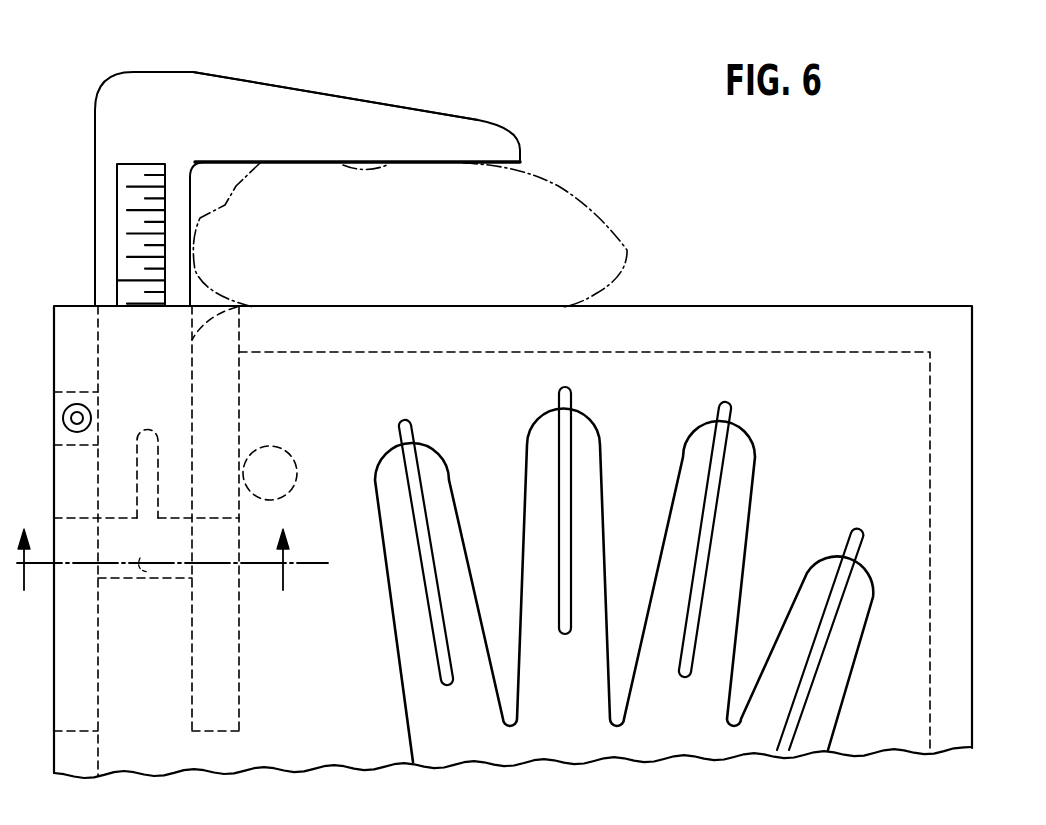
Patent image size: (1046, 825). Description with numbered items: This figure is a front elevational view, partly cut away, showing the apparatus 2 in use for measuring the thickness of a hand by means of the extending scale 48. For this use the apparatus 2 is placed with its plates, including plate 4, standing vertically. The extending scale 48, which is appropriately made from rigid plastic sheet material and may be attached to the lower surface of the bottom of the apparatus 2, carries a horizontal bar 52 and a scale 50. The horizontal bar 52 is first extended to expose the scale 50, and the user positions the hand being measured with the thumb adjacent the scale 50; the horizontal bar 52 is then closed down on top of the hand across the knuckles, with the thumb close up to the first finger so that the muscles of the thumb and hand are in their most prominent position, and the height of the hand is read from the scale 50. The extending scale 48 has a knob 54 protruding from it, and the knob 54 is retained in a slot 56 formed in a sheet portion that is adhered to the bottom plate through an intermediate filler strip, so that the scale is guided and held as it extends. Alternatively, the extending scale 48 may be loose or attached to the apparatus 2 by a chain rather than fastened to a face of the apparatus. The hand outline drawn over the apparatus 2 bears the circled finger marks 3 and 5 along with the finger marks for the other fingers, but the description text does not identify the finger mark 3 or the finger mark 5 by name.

The glove fixture / template 2 is at (494, 470).
The middle finger stiffener 3 is at (565, 510).
The ring finger stiffener 4 is at (705, 539).
The little finger stiffener 5 is at (820, 639).
The clamp body 48 is at (162, 84).
The ruler / gauge 50 is at (128, 247).
The clamp arm 52 is at (340, 107).
The slot 54 is at (148, 565).
The slot 56 is at (148, 430).